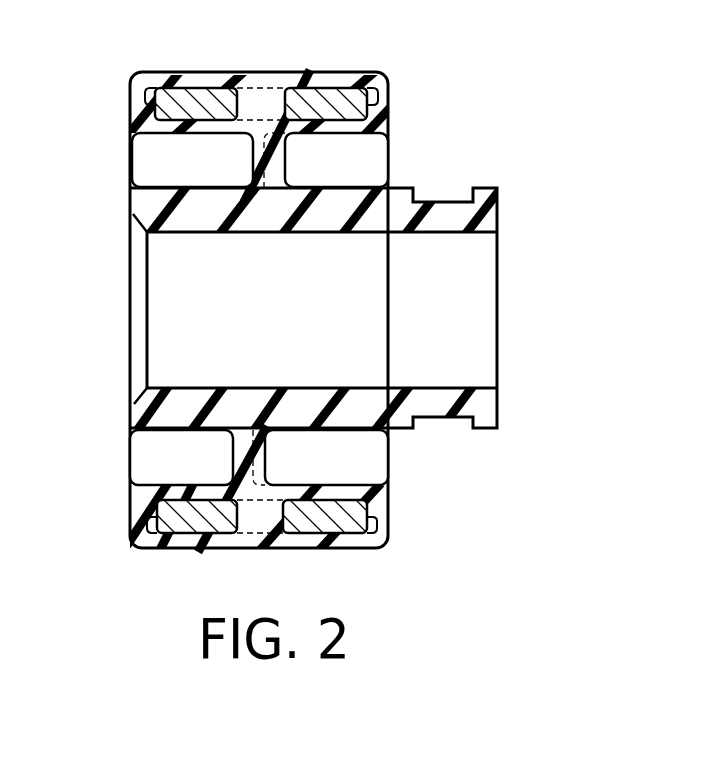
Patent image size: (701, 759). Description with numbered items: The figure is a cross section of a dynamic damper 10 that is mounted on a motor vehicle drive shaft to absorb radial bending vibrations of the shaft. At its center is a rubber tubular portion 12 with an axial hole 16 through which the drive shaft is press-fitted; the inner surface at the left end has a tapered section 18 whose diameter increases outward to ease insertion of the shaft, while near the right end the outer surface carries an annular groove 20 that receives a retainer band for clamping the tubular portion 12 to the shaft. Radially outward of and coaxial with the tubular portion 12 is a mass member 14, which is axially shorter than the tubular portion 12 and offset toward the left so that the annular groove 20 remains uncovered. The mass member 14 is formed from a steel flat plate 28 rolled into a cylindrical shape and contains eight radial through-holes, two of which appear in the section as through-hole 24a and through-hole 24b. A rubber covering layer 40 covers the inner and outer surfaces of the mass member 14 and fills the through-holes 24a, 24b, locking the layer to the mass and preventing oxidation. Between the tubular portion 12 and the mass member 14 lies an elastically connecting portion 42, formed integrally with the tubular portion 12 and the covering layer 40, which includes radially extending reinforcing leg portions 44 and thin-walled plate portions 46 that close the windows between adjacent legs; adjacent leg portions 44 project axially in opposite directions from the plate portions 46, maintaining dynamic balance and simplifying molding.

The dynamic damper 10 is at (312, 315).
The tubular portion 12 is at (302, 315).
The mass member 14 is at (257, 315).
The axial hole 16 is at (442, 387).
The tapered section 18 is at (134, 224).
The annular groove 20 is at (464, 438).
The through-hole 24a is at (272, 105).
The through-hole 24b is at (265, 540).
The flat plate 28 is at (197, 103).
The covering layer 40 is at (177, 545).
The elastically connecting portion 42 is at (230, 453).
The reinforcing leg portion 44 is at (300, 150).
The thin-walled plate portion 46 is at (253, 150).